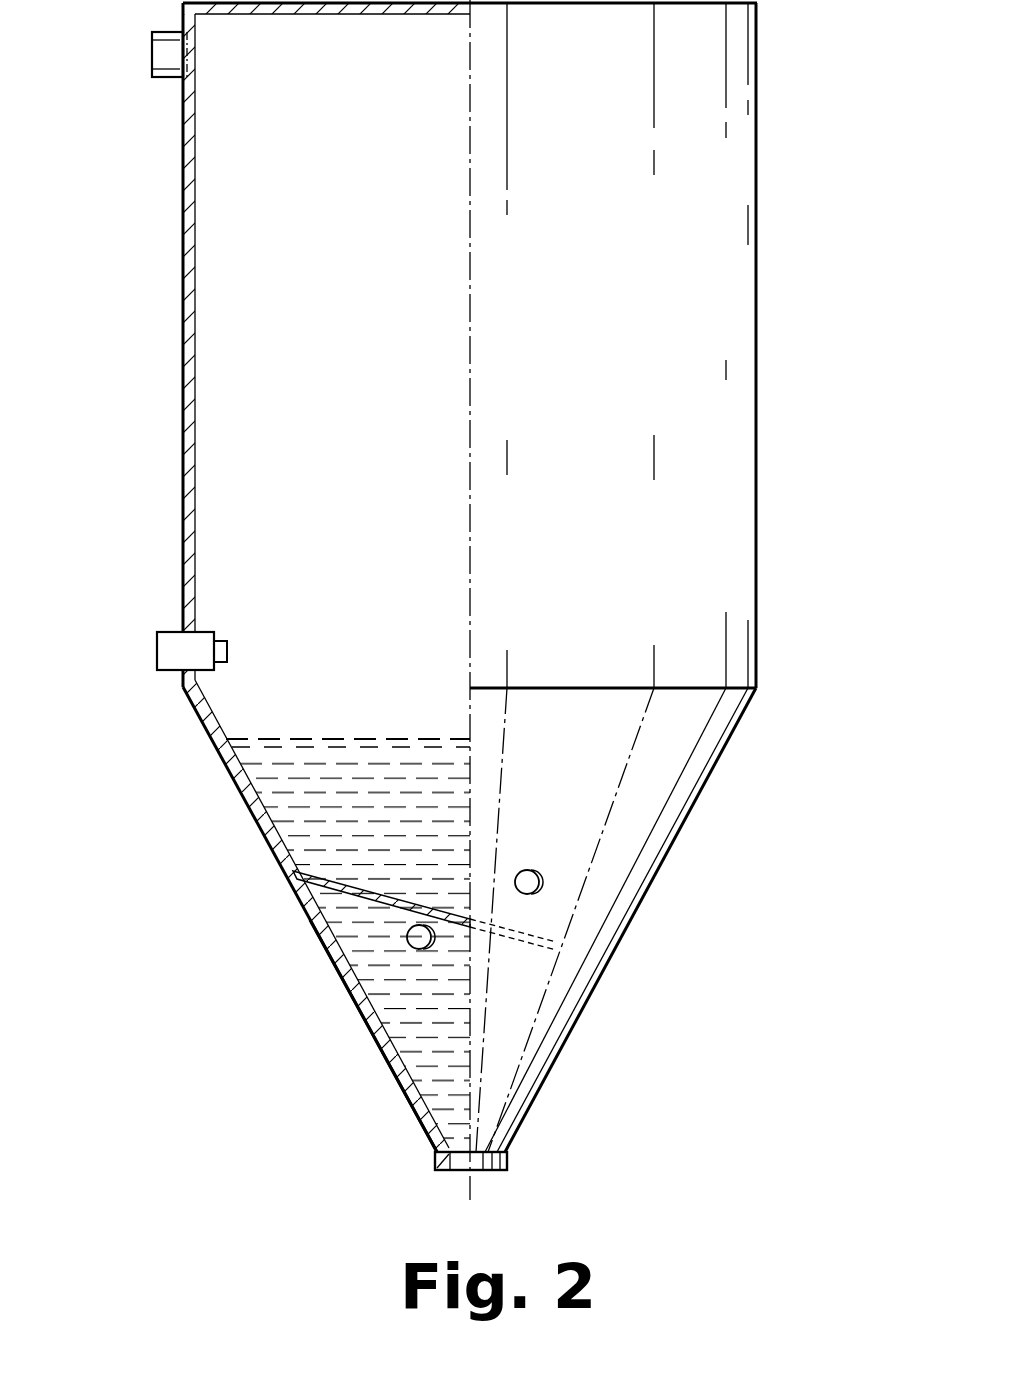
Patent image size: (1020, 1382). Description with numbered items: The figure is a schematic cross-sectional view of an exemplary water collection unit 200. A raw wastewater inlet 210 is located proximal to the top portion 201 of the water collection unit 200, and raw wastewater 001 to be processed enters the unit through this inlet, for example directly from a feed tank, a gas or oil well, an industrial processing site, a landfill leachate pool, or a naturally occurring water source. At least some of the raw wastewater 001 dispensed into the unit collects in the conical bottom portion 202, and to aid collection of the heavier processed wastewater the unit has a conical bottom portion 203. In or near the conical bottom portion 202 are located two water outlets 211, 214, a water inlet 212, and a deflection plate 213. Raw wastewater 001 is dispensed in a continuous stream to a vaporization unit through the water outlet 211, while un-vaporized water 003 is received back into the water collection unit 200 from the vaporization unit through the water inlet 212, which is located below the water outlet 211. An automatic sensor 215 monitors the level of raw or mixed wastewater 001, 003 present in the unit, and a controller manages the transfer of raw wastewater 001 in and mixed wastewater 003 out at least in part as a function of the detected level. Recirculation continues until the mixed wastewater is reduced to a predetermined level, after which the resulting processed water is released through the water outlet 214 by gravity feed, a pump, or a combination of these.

The water collection unit 200 is at (858, 99).
The top portion 201 is at (757, 193).
The conical bottom portion 202 is at (677, 836).
The conical bottom portion 203 is at (412, 1112).
The raw wastewater 001 is at (440, 1067).
The un-vaporized water 003 is at (353, 951).
The raw wastewater inlet 210 is at (152, 50).
The water outlet 211 is at (538, 870).
The water inlet 212 is at (403, 930).
The deflection plate 213 is at (338, 874).
The water outlet 214 is at (480, 1170).
The automatic sensor 215 is at (157, 648).